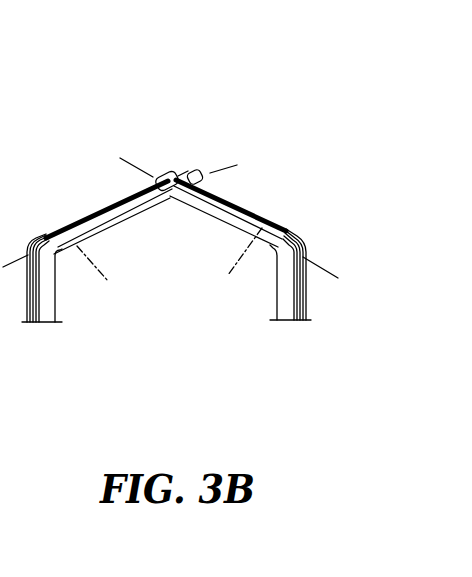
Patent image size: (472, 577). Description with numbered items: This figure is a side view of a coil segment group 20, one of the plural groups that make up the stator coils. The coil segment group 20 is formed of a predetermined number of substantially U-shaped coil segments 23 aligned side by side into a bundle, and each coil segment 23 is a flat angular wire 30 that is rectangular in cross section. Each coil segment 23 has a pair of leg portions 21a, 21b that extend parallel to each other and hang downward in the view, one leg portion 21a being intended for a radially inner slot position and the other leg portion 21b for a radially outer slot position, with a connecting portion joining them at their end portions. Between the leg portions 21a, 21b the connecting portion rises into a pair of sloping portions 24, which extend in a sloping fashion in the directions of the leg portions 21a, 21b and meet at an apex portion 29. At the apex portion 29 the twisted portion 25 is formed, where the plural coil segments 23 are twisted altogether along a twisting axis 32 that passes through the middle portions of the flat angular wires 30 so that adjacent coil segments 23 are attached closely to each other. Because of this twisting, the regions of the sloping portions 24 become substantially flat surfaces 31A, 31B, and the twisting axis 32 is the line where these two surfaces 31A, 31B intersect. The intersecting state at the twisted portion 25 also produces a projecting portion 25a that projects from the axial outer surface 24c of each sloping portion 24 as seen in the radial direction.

The coil segment group 20 is at (186, 243).
The leg portion 21a is at (287, 302).
The leg portion 21b is at (56, 303).
The coil segment 23 is at (31, 318).
The flat angular wire 30 is at (30, 293).
The sloping portion 24 is at (85, 217).
The axial outer surface 24c is at (130, 197).
The twisted portion 25 is at (169, 178).
The apex portion 29 is at (169, 178).
The projecting portion 25a is at (160, 172).
The twisting axis 32 is at (177, 184).
The surface 31A is at (99, 275).
The surface 31B is at (236, 266).